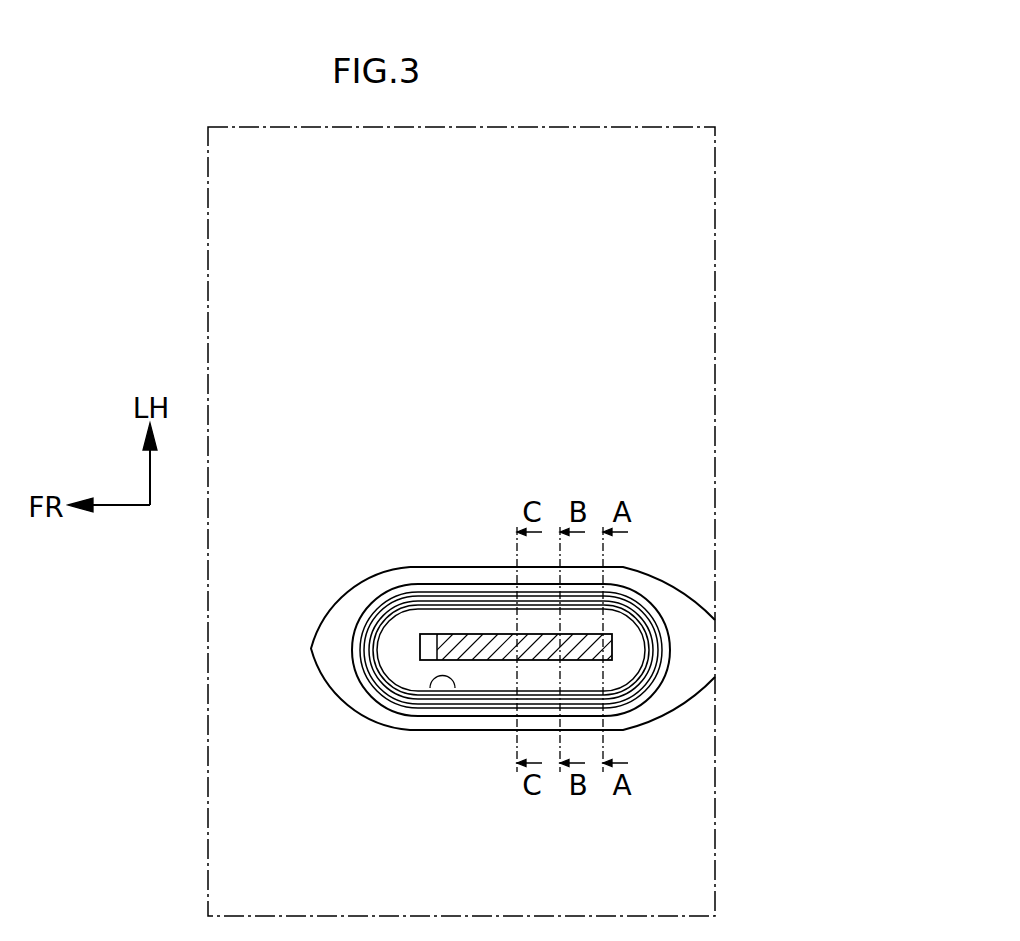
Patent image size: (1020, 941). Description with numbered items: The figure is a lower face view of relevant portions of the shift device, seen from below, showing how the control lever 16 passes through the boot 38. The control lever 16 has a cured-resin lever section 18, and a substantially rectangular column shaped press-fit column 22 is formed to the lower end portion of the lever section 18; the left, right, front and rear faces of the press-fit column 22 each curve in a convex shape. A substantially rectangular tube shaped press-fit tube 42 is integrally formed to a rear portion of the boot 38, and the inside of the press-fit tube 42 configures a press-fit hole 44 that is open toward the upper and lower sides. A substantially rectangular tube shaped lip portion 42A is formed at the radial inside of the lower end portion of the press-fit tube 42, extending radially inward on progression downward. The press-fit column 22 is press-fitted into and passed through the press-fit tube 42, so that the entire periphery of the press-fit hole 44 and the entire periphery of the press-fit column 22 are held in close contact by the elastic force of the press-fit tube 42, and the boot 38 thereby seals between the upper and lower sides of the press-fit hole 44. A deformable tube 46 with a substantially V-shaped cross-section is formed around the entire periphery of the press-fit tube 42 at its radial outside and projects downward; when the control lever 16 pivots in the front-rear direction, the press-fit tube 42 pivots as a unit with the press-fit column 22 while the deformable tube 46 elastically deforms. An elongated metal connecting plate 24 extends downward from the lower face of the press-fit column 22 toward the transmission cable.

The boot 38 is at (227, 328).
The deformable tube 46 is at (363, 652).
The press-fit tube 42 is at (484, 592).
The lip portion 42A is at (483, 700).
The press-fit column 22 is at (400, 593).
The lever section 18 is at (511, 650).
The control lever 16 is at (632, 610).
The press-fit hole 44 is at (430, 688).
The connecting plate 24 is at (447, 634).